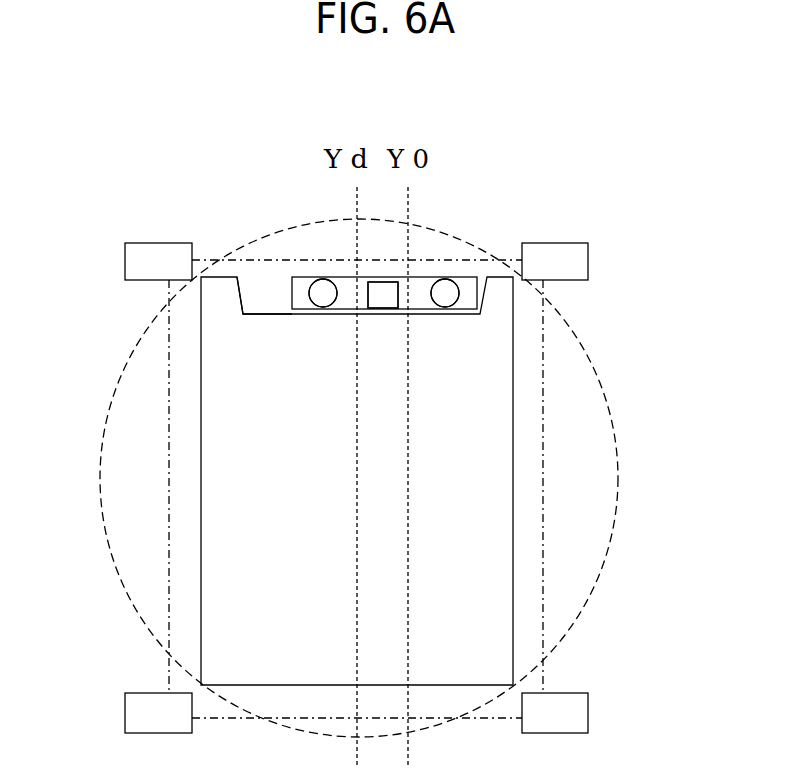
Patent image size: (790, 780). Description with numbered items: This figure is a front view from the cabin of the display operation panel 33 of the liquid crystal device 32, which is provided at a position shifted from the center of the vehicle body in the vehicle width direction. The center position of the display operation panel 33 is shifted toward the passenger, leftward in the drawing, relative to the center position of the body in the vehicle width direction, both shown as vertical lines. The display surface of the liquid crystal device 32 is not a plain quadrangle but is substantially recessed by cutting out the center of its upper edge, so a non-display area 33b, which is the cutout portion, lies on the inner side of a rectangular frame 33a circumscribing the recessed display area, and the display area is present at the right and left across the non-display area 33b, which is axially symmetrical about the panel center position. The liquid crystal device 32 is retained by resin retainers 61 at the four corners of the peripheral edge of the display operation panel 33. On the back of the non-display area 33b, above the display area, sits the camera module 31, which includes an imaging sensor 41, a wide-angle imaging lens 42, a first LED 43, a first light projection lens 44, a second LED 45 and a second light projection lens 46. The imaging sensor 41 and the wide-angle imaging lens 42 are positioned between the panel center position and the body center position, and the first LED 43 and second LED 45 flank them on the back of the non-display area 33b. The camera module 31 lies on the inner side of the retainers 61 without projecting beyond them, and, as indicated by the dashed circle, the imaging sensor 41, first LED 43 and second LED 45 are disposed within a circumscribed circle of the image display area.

The camera module 31 is at (424, 277).
The liquid crystal device 32 is at (513, 410).
The display operation panel 33 is at (548, 532).
The rectangular frame 33a is at (250, 255).
The non-display area 33b is at (240, 306).
The imaging sensor 41 is at (378, 278).
The wide-angle imaging lens 42 is at (383, 295).
The first LED 43 is at (323, 291).
The first light projection lens 44 is at (323, 293).
The second LED 45 is at (447, 280).
The second light projection lens 46 is at (445, 293).
The resin retainers 61 is at (132, 263).